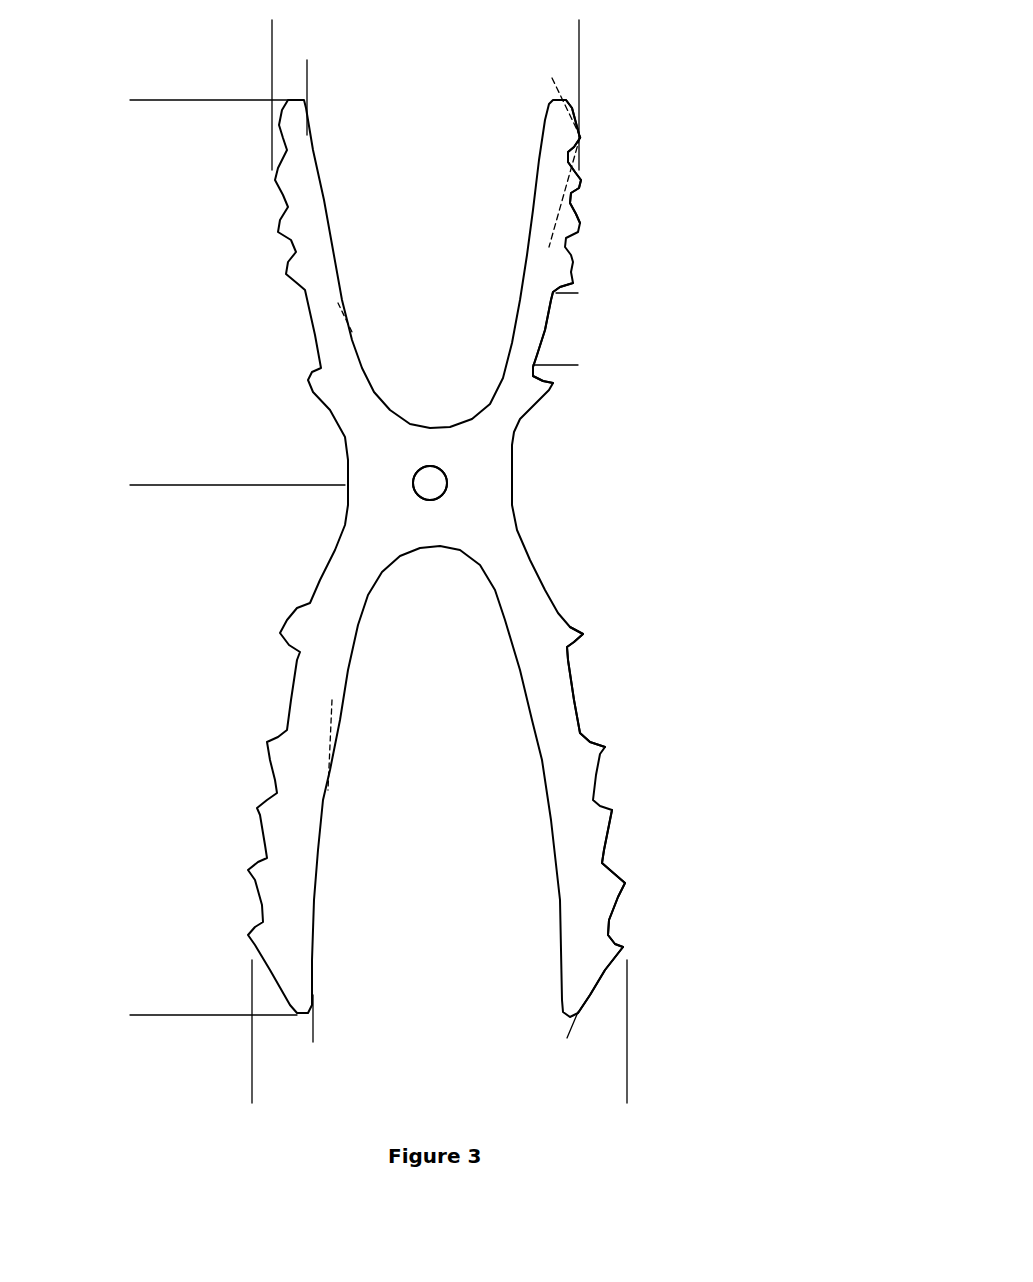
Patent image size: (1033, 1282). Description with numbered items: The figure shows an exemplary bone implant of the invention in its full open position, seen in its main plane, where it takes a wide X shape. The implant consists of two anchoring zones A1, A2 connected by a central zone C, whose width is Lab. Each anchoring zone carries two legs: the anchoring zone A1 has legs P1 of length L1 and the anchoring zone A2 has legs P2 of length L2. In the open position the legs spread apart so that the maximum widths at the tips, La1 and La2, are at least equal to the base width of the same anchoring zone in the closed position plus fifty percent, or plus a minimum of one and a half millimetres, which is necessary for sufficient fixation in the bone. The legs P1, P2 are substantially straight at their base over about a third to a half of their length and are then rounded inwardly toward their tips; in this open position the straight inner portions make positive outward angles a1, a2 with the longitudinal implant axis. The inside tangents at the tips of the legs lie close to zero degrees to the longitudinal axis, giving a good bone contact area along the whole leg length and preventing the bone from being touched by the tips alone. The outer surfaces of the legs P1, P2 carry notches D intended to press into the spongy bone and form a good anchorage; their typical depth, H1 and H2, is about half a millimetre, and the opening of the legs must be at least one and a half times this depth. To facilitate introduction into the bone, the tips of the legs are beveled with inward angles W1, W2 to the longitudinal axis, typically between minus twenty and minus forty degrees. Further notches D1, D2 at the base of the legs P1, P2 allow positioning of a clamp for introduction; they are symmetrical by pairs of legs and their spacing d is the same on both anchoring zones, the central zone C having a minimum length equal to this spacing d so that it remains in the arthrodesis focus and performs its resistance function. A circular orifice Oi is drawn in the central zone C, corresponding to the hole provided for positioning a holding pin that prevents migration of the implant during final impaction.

The maximum width at the tips of anchoring zone A2 La2 is at (577, 25).
The bevel angle at the tips of legs P2 W2 is at (606, 84).
The anchoring zone A2 is at (581, 116).
The notches D is at (583, 142).
The legs P2 is at (516, 258).
The depth of notches on legs P2 H2 is at (527, 236).
The outward angle of legs P2 a2 is at (385, 305).
The length of legs P2 L2 is at (132, 483).
The spacing between notches D1 and D2 d is at (570, 295).
The notches on legs P2 D2 is at (557, 383).
The width of the central zone Lab is at (350, 460).
The central hole Oi is at (411, 489).
The central zone C is at (483, 507).
The notches on legs P1 D1 is at (609, 746).
The outward angle of legs P1 a1 is at (308, 727).
The depth of notches on legs P1 H1 is at (567, 810).
The legs P1 is at (536, 748).
The length of legs P1 L1 is at (132, 1013).
The bevel angle at the tips of legs P1 W1 is at (645, 1047).
The anchoring zone A1 is at (626, 950).
The maximum width at the tips of anchoring zone A1 La1 is at (625, 1097).